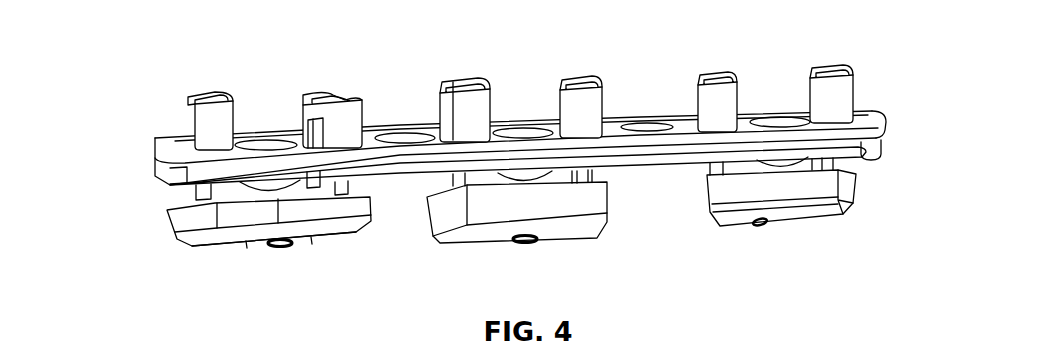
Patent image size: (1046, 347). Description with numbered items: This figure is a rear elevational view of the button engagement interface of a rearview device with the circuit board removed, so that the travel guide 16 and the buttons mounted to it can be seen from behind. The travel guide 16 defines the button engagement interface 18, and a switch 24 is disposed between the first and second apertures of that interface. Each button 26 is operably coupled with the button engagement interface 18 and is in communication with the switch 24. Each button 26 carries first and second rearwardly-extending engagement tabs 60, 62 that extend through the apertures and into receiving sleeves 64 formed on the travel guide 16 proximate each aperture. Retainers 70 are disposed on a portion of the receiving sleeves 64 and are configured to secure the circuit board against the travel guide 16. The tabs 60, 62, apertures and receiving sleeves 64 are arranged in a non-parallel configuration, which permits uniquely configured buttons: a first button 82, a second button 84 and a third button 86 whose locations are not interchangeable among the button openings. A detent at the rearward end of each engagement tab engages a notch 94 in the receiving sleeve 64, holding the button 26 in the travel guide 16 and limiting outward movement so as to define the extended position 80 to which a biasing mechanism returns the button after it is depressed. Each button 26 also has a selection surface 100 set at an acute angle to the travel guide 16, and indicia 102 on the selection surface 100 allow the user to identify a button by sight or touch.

The travel guide 16 is at (780, 140).
The button engagement interface 18 is at (680, 178).
The switch 24 is at (272, 189).
The button 26 is at (192, 285).
The first rearwardly-extending engagement tab 60 is at (183, 199).
The second rearwardly-extending engagement tab 62 is at (353, 188).
The receiving sleeve 64 is at (590, 104).
The retainer 70 is at (297, 115).
The extended position 80 is at (462, 272).
The first button 82 is at (823, 210).
The second button 84 is at (571, 229).
The third button 86 is at (313, 237).
The notch 94 is at (433, 126).
The selection surface 100 is at (247, 238).
The indicia 102 is at (760, 225).